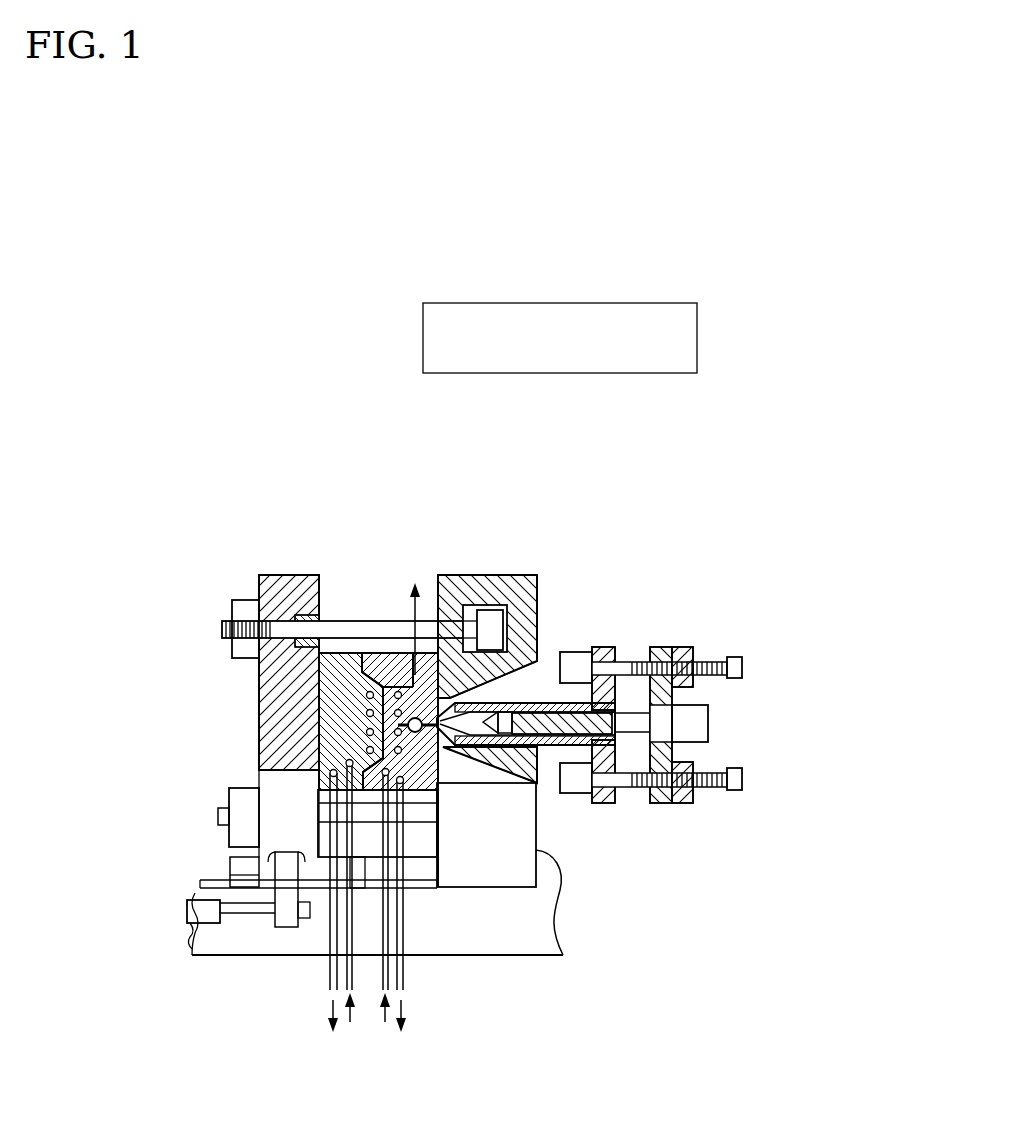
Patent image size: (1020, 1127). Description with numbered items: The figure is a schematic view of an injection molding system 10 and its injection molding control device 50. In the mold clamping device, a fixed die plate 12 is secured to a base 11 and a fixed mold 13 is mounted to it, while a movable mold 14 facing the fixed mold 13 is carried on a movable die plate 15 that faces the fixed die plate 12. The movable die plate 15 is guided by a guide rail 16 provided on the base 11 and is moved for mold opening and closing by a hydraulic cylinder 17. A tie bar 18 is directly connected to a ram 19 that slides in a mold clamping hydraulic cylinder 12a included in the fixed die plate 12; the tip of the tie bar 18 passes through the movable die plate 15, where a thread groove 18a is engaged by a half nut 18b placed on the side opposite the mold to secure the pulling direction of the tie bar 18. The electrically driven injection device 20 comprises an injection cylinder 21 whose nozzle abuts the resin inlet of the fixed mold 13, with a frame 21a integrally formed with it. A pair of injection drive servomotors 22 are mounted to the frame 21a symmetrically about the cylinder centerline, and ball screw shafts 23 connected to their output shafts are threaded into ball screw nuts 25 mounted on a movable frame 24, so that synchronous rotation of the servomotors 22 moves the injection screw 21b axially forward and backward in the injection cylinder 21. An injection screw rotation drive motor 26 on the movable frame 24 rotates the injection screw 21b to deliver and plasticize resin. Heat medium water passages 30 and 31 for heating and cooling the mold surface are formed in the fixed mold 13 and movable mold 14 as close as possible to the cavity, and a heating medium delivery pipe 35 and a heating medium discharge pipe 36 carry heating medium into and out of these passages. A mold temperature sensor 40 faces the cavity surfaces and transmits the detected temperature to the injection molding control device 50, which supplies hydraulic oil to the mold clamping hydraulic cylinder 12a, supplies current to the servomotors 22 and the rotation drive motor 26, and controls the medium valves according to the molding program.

The injection molding system 10 is at (399, 512).
The base 11 is at (562, 957).
The fixed die plate 12 is at (528, 689).
The mold clamping hydraulic cylinder 12a is at (520, 580).
The fixed mold 13 is at (445, 760).
The movable mold 14 is at (320, 788).
The movable die plate 15 is at (259, 703).
The guide rail 16 is at (215, 880).
The hydraulic cylinder 17 is at (187, 927).
The tie bar 18 is at (313, 573).
The thread groove 18a is at (223, 628).
The half nut 18b is at (248, 600).
The ram 19 is at (505, 625).
The injection device 20 is at (665, 869).
The injection cylinder 21 is at (541, 726).
The frame 21a is at (603, 803).
The injection screw 21b is at (574, 650).
The injection drive servomotor 22 is at (592, 645).
The ball screw shaft 23 is at (730, 680).
The movable frame 24 is at (660, 803).
The ball screw nut 25 is at (680, 647).
The injection screw rotation drive motor 26 is at (708, 742).
The heat medium water passage 30 is at (405, 782).
The heat medium water passage 31 is at (320, 760).
The heating medium delivery pipe 35 is at (360, 972).
The heating medium discharge pipe 36 is at (368, 921).
The mold temperature sensor 40 is at (393, 675).
The injection molding control device 50 is at (697, 340).